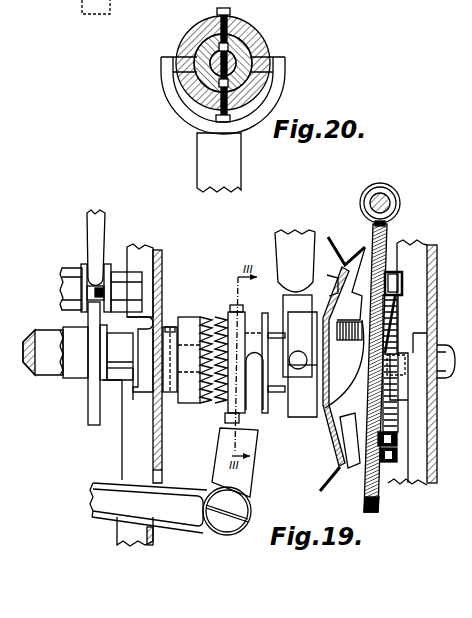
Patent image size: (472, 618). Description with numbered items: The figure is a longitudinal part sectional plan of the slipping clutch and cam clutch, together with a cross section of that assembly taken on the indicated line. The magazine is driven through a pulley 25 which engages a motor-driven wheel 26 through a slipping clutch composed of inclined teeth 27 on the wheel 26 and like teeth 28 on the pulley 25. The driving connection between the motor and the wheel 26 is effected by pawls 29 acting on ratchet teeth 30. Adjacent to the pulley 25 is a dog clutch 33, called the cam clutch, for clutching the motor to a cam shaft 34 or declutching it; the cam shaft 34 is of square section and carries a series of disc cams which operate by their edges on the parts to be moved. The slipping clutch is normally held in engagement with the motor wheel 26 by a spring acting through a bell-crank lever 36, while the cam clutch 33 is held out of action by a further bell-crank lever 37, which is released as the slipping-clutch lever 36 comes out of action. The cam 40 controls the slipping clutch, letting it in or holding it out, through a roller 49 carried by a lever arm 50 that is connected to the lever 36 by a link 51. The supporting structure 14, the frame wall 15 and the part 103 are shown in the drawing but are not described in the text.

In FIG. 19, the bracket 14 is at (160, 272).
In FIG. 19, the frame wall 15 is at (437, 286).
In FIG. 19, the pulley 25 is at (339, 252).
In FIG. 19, the motor-driven wheel 26 is at (388, 238).
In FIG. 19, the inclined teeth 27 is at (371, 364).
In FIG. 19, the like teeth 28 is at (341, 318).
In FIG. 19, the pawls 29 is at (398, 273).
In FIG. 19, the ratchet teeth 30 is at (399, 415).
In FIG. 20, the dog clutch 33 is at (266, 41).
In FIG. 19, the dog clutch 33 is at (218, 317).
In FIG. 20, the cam shaft 34 is at (209, 55).
In FIG. 19, the cam shaft 34 is at (48, 329).
In FIG. 19, the bell-crank lever 36 is at (280, 241).
In FIG. 20, the bell-crank lever 37 is at (199, 150).
In FIG. 19, the bell-crank lever 37 is at (103, 480).
In FIG. 19, the cam 40 is at (87, 396).
In FIG. 19, the roller 49 is at (101, 292).
In FIG. 19, the lever arm 50 is at (69, 284).
In FIG. 19, the link 51 is at (101, 226).
In FIG. 19, the boss 103 is at (441, 349).